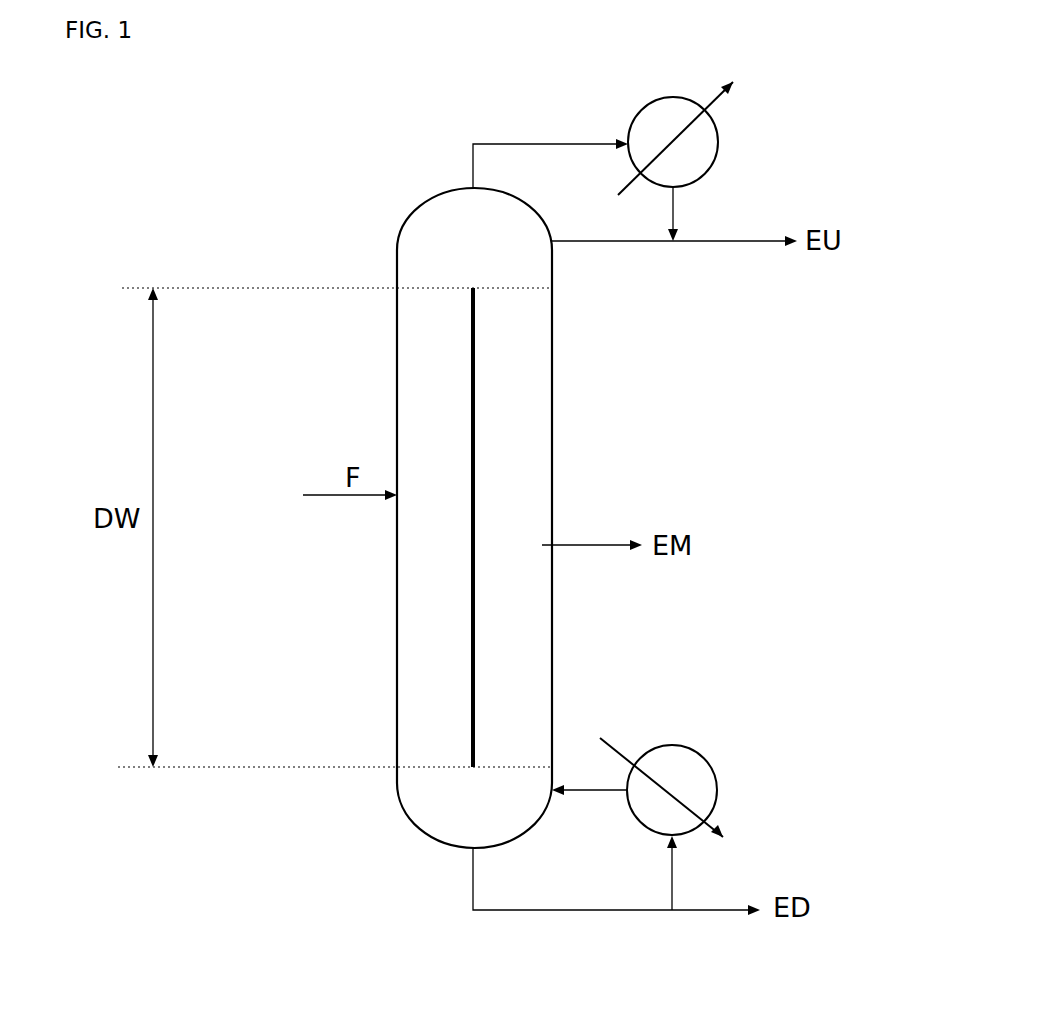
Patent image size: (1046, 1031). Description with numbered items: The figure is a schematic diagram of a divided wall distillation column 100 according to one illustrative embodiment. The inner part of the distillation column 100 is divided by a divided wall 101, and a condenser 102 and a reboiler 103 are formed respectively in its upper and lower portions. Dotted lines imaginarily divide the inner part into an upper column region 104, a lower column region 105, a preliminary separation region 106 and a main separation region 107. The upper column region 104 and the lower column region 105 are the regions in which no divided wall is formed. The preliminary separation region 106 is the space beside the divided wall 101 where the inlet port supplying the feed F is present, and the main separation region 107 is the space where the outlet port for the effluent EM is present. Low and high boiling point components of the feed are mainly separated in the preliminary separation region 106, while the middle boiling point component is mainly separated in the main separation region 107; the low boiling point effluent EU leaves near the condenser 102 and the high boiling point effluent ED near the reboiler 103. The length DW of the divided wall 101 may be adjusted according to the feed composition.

The divided wall distillation column 100 is at (398, 197).
The divided wall 101 is at (475, 430).
The condenser 102 is at (718, 140).
The reboiler 103 is at (697, 753).
The upper column region 104 is at (457, 235).
The lower column region 105 is at (457, 795).
The preliminary separation region 106 is at (415, 393).
The main separation region 107 is at (528, 620).